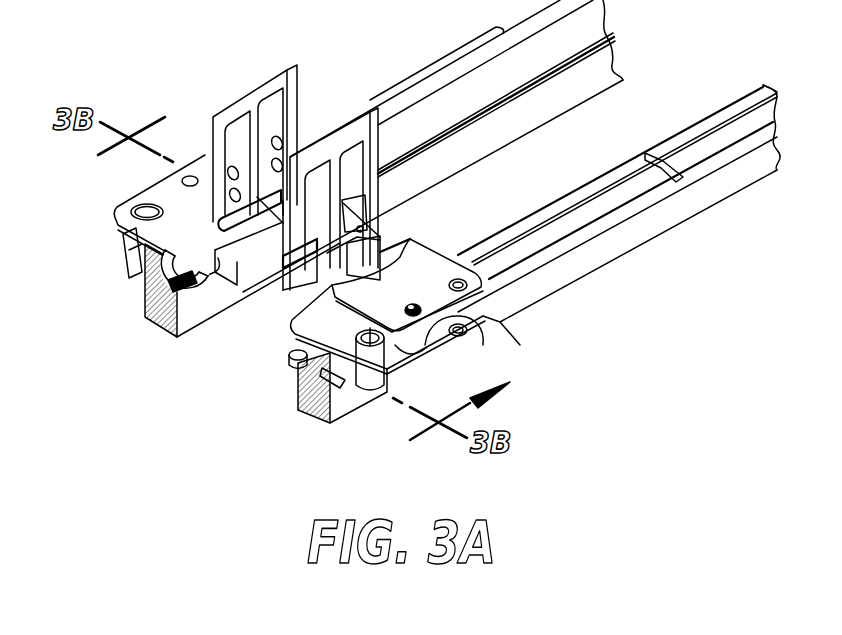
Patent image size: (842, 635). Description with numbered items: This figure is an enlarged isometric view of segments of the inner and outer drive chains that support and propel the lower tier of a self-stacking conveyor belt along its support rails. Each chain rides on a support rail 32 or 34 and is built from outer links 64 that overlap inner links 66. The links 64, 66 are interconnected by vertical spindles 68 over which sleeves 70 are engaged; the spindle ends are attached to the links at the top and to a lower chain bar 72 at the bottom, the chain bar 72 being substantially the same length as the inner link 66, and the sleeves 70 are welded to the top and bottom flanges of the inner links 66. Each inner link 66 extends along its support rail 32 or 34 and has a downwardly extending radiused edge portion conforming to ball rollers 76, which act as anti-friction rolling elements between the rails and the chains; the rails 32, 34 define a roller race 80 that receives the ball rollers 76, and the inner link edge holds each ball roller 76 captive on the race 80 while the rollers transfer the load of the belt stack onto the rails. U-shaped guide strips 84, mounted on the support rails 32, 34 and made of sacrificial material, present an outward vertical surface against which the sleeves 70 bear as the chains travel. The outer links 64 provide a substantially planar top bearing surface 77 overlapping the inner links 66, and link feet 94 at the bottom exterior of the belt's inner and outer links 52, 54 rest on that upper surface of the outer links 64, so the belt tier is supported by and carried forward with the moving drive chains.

The inner support rail 32 is at (153, 330).
The outer support rail 34 is at (307, 417).
The inner link 52 is at (273, 87).
The outer link 54 is at (343, 130).
The outer link 64 is at (207, 167).
The inner link 66 is at (123, 262).
The vertical spindle 68 is at (500, 323).
The sleeve 70 is at (413, 352).
The chain bar 72 is at (462, 345).
The ball roller 76 is at (193, 273).
The top bearing surface 77 is at (328, 272).
The roller race 80 is at (292, 355).
The guide strip 84 is at (360, 112).
The link foot 94 is at (418, 236).